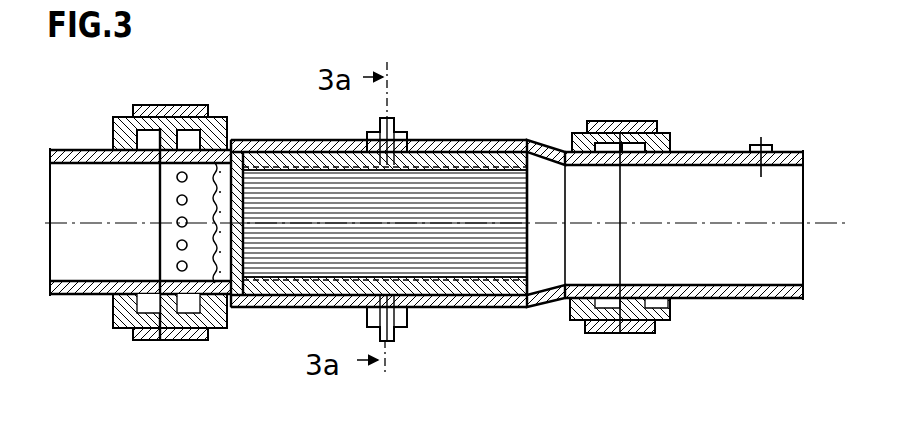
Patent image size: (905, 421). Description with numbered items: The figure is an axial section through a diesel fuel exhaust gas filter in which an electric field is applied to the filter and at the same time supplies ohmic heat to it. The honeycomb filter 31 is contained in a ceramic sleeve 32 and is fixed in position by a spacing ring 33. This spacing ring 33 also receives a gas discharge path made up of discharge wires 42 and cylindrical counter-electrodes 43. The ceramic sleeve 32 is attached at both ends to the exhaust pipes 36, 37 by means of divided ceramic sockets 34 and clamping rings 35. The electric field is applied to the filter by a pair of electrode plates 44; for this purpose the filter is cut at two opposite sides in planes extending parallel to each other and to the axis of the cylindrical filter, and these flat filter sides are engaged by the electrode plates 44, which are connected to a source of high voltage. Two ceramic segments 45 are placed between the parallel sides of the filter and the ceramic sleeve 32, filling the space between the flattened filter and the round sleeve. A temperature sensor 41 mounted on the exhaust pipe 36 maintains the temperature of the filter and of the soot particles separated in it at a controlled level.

The honeycomb filter 31 is at (530, 225).
The ceramic sleeve 32 is at (550, 143).
The spacing ring 33 is at (162, 292).
The divided ceramic sockets 34 is at (222, 117).
The clamping rings 35 is at (202, 105).
The exhaust pipe 36 is at (735, 166).
The exhaust pipe 37 is at (125, 164).
The temperature sensor 41 is at (762, 145).
The discharge wires 42 is at (217, 163).
The cylindrical counter-electrodes 43 is at (176, 200).
The electrode plates 44 is at (356, 140).
The ceramic segments 45 is at (480, 150).